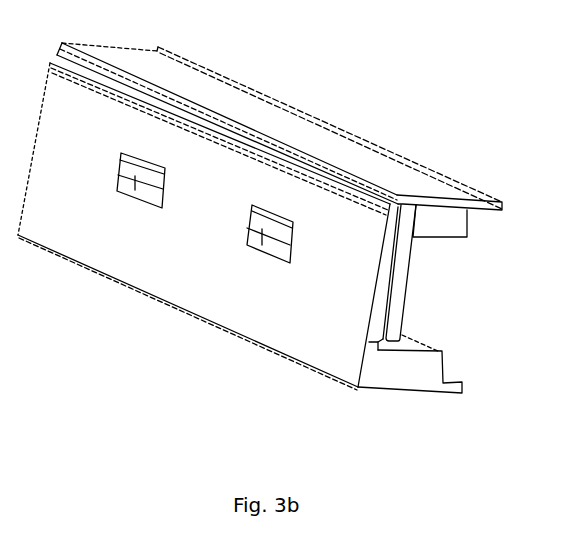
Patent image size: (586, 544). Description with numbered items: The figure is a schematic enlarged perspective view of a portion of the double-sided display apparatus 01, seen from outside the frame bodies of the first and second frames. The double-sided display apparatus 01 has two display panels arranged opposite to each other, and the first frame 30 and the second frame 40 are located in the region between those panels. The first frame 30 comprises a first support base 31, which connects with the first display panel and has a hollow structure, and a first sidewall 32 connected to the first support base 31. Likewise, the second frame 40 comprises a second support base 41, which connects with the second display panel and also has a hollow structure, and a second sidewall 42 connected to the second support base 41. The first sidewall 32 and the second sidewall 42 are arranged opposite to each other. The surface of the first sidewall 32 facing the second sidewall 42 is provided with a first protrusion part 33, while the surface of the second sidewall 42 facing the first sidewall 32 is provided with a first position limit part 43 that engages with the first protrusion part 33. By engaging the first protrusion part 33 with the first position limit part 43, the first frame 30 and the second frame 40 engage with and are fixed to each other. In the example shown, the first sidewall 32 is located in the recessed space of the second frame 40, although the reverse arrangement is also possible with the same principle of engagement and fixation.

The double-sided display apparatus 01 is at (390, 102).
The first frame 30 is at (505, 275).
The first support base 31 is at (437, 217).
The first sidewall 32 is at (402, 277).
The first protrusion part 33 is at (147, 168).
The second frame 40 is at (418, 448).
The second support base 41 is at (385, 368).
The second sidewall 42 is at (238, 303).
The first position limit part 43 is at (133, 195).